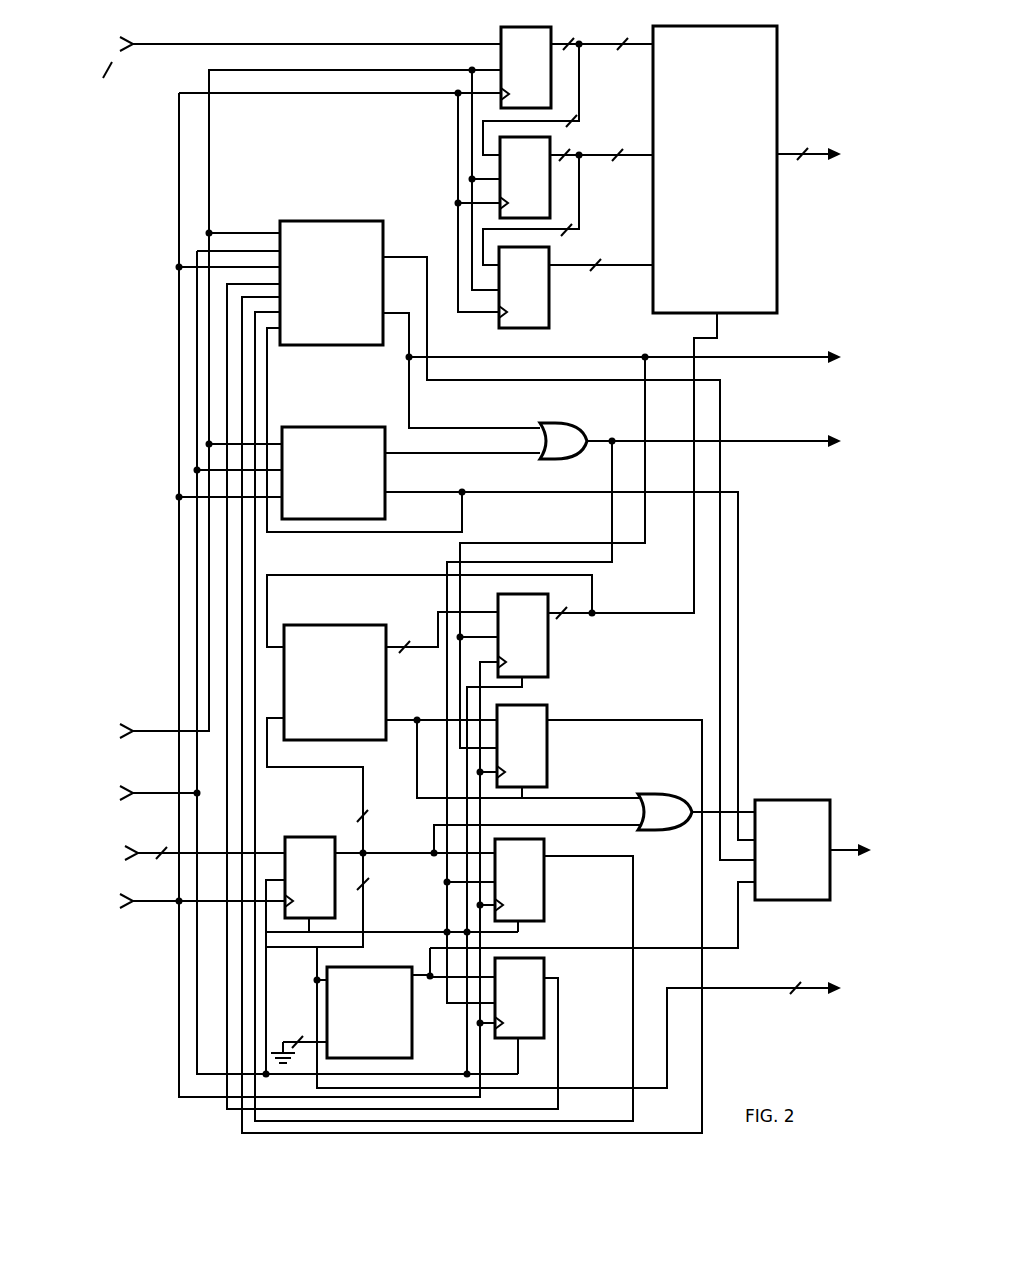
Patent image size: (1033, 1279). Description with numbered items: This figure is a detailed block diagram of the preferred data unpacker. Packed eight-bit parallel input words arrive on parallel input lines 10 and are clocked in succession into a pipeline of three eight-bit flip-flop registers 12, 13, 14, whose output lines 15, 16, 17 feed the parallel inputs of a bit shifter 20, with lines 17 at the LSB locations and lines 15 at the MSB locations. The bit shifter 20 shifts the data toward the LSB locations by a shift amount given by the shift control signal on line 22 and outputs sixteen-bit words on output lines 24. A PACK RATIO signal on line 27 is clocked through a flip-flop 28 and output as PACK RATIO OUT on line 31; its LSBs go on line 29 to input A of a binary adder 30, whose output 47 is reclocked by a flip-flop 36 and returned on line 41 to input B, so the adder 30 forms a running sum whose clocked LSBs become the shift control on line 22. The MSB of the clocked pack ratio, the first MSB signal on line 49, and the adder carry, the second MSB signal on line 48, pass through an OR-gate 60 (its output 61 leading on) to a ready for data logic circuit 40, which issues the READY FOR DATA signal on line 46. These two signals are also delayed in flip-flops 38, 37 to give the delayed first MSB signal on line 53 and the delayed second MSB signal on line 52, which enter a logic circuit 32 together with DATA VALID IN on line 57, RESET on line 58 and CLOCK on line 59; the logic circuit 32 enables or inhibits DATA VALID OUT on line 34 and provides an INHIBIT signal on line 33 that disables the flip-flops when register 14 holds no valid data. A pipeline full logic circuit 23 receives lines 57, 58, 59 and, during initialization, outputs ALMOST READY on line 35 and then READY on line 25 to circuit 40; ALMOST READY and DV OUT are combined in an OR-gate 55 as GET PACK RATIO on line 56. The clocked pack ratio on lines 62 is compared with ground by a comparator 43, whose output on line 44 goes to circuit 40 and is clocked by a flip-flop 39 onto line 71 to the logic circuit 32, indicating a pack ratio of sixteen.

The parallel input lines 10 is at (178, 43).
The first flip-flop register 12 is at (551, 93).
The second flip-flop register 13 is at (550, 203).
The third flip-flop register 14 is at (549, 312).
The output lines of register 12 15 is at (588, 47).
The output lines of register 13 16 is at (588, 158).
The output lines of register 14 17 is at (585, 268).
The bit shifter 20 is at (770, 50).
The shift control signal line 22 is at (700, 368).
The pipeline full logic circuit 23 is at (322, 428).
The output lines 24 is at (826, 150).
The READY control signal line 25 is at (310, 532).
The PACK RATIO control signal line 27 is at (150, 845).
The flip-flop 28 is at (303, 837).
The LSB line 29 is at (298, 767).
The binary adder 30 is at (322, 638).
The PACK RATIO OUT line 31 is at (808, 984).
The logic circuit 32 is at (323, 240).
The INHIBIT control signal line 33 is at (425, 298).
The DATA VALID OUT control signal line 34 is at (820, 352).
The ALMOST READY control signal line 35 is at (465, 455).
The flip-flop 36 is at (537, 658).
The flip-flop 37 is at (540, 703).
The flip-flop 38 is at (533, 887).
The flip-flop 39 is at (537, 965).
The ready for data logic circuit 40 is at (793, 802).
The feedback line 41 is at (594, 583).
The comparator 43 is at (365, 972).
The comparator output line 44 is at (417, 980).
The READY FOR DATA control signal line 46 is at (842, 850).
The adder output 47 is at (437, 623).
The MSB 2 carry line 48 is at (402, 737).
The MSB 1 line 49 is at (390, 860).
The MSB 2 DEL line 52 is at (242, 393).
The MSB 1 DEL line 53 is at (255, 418).
The OR-gate 55 is at (558, 430).
The GET PACK RATIO control signal line 56 is at (768, 441).
The DATA VALID IN control signal line 57 is at (155, 725).
The RESET signal line 58 is at (155, 790).
The CLOCK signal line 59 is at (155, 905).
The OR-gate 60 is at (657, 797).
The OR gate output line 61 is at (713, 797).
The clocked pack ratio lines 62 is at (367, 903).
The control signal line 71 is at (228, 368).